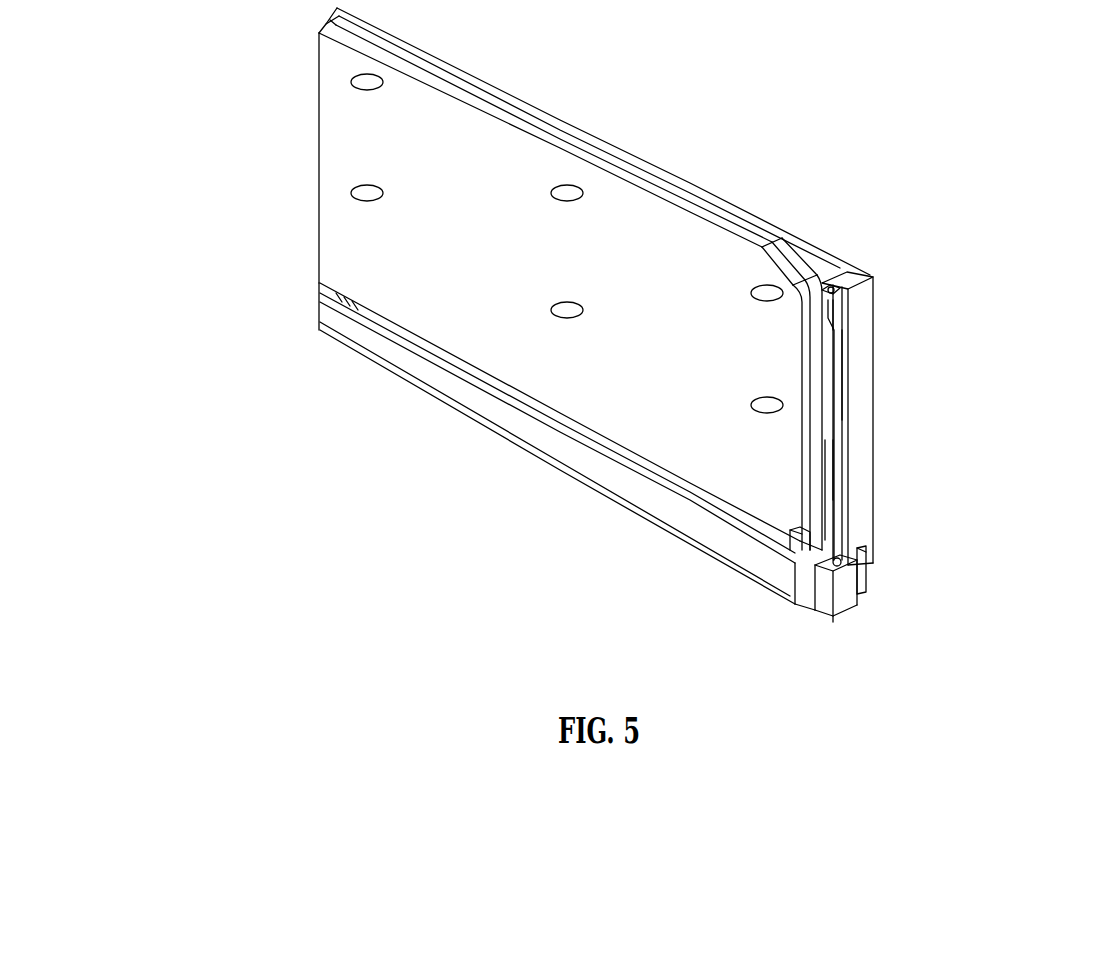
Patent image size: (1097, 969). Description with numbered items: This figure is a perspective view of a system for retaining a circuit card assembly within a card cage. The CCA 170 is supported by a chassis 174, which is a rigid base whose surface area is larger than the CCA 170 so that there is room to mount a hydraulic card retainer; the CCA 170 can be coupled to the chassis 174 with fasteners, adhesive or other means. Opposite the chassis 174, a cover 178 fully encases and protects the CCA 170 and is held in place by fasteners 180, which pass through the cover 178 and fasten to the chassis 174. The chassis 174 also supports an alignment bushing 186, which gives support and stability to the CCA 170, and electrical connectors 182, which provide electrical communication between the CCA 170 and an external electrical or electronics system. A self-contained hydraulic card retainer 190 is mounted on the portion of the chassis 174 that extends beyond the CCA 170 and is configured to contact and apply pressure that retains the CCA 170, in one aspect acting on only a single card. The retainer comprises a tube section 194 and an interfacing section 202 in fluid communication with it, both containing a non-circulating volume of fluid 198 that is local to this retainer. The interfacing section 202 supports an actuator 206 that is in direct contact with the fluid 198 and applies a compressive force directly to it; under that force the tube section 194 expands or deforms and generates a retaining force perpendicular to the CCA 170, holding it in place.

The circuit card assembly (CCA) 170 is at (865, 563).
The chassis 174 is at (860, 292).
The cover 178 is at (333, 256).
The fasteners 180 is at (350, 194).
The electrical connectors 182 is at (690, 548).
The alignment bushing 186 is at (857, 608).
The self-contained hydraulic card retainer 190 is at (847, 404).
The tube section 194 is at (833, 503).
The non-circulating volume of fluid 198 is at (833, 468).
The interfacing section 202 is at (843, 312).
The actuator 206 is at (838, 268).